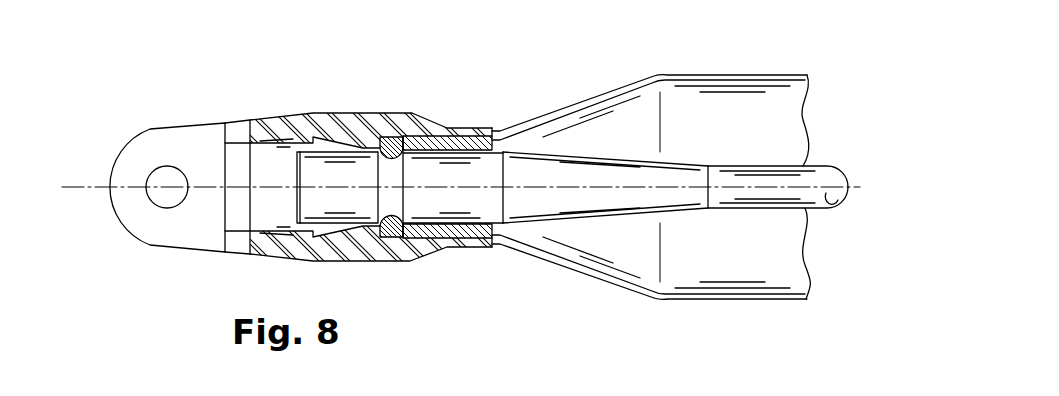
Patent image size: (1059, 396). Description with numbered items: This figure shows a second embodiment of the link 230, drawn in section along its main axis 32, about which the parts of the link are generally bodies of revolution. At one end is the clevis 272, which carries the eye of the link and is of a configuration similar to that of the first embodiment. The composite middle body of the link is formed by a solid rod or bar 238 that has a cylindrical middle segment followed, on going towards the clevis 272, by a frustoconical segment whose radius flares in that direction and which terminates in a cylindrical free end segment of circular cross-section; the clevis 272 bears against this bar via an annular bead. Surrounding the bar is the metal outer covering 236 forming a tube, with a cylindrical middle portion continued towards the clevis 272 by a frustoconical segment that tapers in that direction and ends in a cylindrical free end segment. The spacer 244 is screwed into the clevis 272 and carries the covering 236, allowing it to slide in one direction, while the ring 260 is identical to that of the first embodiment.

The link 230 is at (543, 53).
The main axis 32 is at (82, 189).
The clevis 272 is at (297, 116).
The spacer 244 is at (470, 137).
The ring 260 is at (396, 238).
The bar 238 is at (772, 175).
The metal outer covering 236 is at (735, 76).